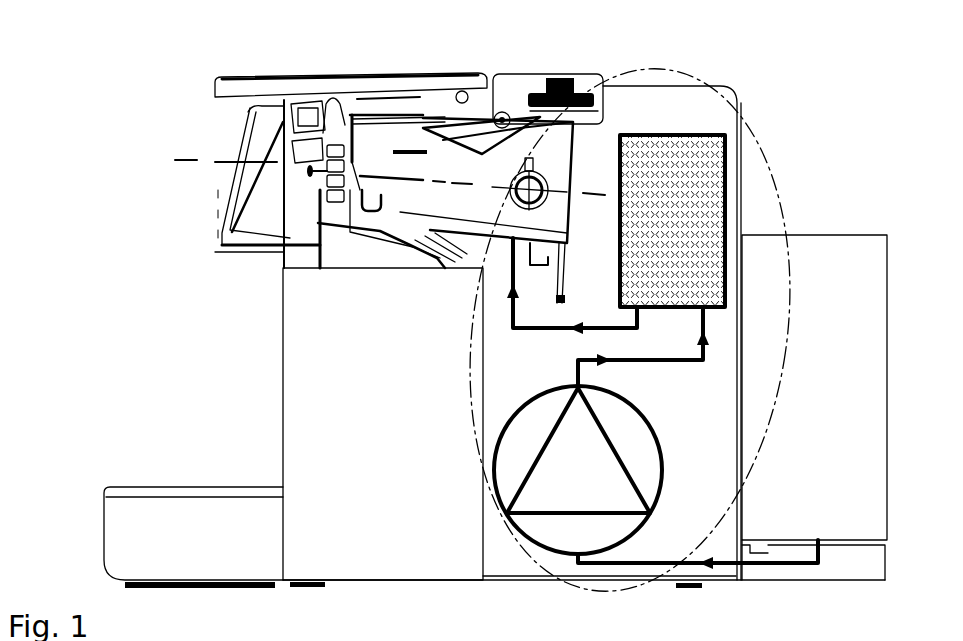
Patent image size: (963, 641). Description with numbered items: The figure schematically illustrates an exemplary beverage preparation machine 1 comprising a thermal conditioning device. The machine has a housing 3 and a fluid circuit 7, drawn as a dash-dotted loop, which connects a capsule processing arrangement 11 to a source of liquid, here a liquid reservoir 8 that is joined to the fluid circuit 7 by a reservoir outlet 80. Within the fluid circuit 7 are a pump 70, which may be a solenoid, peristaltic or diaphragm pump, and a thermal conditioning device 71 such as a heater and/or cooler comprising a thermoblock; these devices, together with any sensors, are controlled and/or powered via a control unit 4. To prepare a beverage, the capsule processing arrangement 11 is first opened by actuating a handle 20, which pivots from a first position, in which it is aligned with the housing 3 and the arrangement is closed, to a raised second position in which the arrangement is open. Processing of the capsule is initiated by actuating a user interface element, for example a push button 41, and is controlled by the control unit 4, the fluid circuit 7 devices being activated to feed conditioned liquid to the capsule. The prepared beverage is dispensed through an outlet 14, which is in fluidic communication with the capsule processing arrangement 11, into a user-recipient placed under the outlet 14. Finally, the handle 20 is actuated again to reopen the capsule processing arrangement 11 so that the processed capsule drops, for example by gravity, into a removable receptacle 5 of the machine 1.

The beverage preparation machine 1 is at (84, 81).
The housing 3 is at (606, 88).
The control unit 4 is at (578, 96).
The removable receptacle 5 is at (305, 354).
The fluid circuit 7 is at (772, 148).
The liquid reservoir 8 is at (855, 424).
The capsule processing arrangement 11 is at (338, 132).
The outlet 14 is at (210, 253).
The handle 20 is at (258, 80).
The push button 41 is at (556, 80).
The pump 70 is at (656, 430).
The thermal conditioning device 71 is at (662, 148).
The reservoir outlet 80 is at (818, 540).